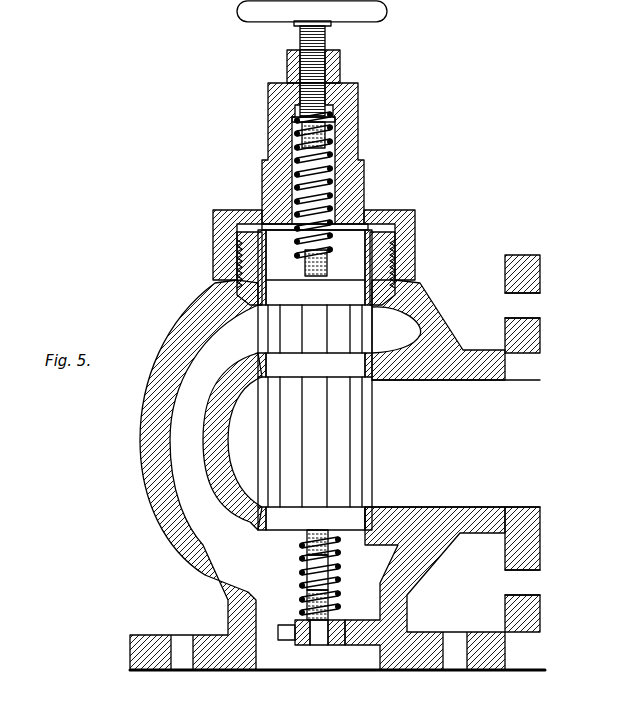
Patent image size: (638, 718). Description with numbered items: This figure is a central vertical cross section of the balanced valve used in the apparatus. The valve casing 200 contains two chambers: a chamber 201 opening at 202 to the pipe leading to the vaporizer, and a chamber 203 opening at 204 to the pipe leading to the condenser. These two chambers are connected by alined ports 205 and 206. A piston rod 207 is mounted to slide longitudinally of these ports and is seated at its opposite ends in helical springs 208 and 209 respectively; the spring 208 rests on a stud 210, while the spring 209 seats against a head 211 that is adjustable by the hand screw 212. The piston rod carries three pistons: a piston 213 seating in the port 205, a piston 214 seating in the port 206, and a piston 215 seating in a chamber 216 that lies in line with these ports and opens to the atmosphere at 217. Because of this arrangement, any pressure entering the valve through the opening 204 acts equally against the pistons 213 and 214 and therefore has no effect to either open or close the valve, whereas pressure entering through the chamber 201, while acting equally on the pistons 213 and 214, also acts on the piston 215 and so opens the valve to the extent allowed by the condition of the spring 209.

The valve casing 200 is at (150, 500).
The chamber 201 is at (190, 404).
The opening 202 is at (278, 660).
The chamber 203 is at (456, 443).
The opening 204 is at (540, 415).
The port 205 is at (382, 510).
The port 206 is at (378, 381).
The piston rod 207 is at (305, 538).
The helical spring 208 is at (320, 590).
The helical spring 209 is at (360, 156).
The stud 210 is at (335, 648).
The head 211 is at (358, 100).
The hand screw 212 is at (388, 12).
The piston 213 is at (338, 515).
The piston 214 is at (357, 360).
The piston 215 is at (400, 283).
The chamber 216 is at (410, 212).
The opening to the atmosphere 217 is at (355, 215).